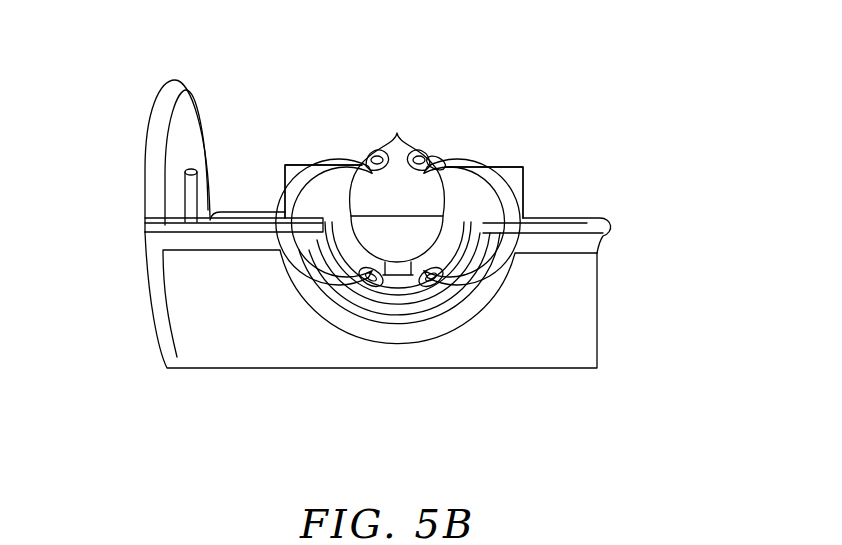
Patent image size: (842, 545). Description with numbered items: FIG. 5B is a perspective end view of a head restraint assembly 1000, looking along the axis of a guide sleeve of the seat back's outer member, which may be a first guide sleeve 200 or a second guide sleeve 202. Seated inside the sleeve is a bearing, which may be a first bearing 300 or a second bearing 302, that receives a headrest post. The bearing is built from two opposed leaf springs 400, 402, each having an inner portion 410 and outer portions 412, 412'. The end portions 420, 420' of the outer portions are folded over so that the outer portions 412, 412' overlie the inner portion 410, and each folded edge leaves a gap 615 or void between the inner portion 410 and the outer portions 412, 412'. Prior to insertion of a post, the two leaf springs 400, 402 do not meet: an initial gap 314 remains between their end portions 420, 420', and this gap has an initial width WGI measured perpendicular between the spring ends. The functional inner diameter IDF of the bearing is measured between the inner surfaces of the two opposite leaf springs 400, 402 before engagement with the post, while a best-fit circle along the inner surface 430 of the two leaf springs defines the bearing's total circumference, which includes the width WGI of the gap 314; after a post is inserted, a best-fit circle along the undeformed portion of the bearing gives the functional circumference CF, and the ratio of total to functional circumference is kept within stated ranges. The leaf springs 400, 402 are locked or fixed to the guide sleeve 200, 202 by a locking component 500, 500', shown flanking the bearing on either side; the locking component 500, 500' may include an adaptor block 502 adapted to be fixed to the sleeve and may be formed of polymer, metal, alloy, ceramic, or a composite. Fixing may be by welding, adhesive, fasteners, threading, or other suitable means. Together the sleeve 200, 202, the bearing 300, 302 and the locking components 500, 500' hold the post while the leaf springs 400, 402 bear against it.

The assembly 1000 is at (708, 101).
The first guide sleeve 200 is at (439, 224).
The second guide sleeve 202 is at (588, 224).
The first bearing 300 is at (354, 151).
The second bearing 302 is at (375, 152).
The initial gap 314 is at (405, 272).
The leaf spring 400 is at (442, 152).
The leaf spring 402 is at (378, 152).
The end portion 420 is at (416, 137).
The end portion 420' is at (394, 344).
The outer portion 412 is at (402, 233).
The outer portion 412' is at (449, 249).
The inner portion 410 is at (347, 260).
The inner surface 430 is at (352, 283).
The locking component 500 is at (524, 157).
The adaptor block 502 is at (522, 167).
The locking component 500' is at (292, 157).
The gap 615 is at (338, 204).
The functional circumference CF is at (437, 150).
The functional inner diameter IDF is at (427, 217).
The initial width WGI is at (405, 283).